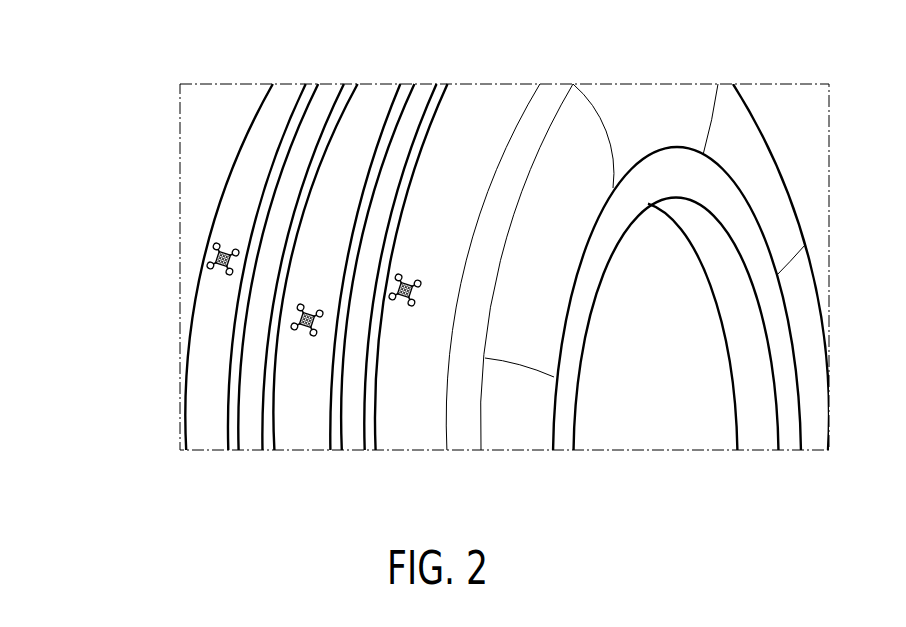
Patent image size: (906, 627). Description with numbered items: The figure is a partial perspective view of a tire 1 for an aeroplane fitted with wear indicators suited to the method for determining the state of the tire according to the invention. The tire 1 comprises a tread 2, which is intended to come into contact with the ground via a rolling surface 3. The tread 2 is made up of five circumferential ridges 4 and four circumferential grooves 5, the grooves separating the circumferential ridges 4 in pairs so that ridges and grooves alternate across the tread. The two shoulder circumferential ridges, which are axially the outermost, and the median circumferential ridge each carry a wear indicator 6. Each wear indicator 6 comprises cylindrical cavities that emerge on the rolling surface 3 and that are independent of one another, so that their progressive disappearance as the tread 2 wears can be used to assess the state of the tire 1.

The tire 1 is at (124, 139).
The tread 2 is at (242, 142).
The rolling surface 3 is at (366, 118).
The circumferential ridges 4 is at (305, 419).
The circumferential grooves 5 is at (332, 452).
The wear indicator 6 is at (295, 317).